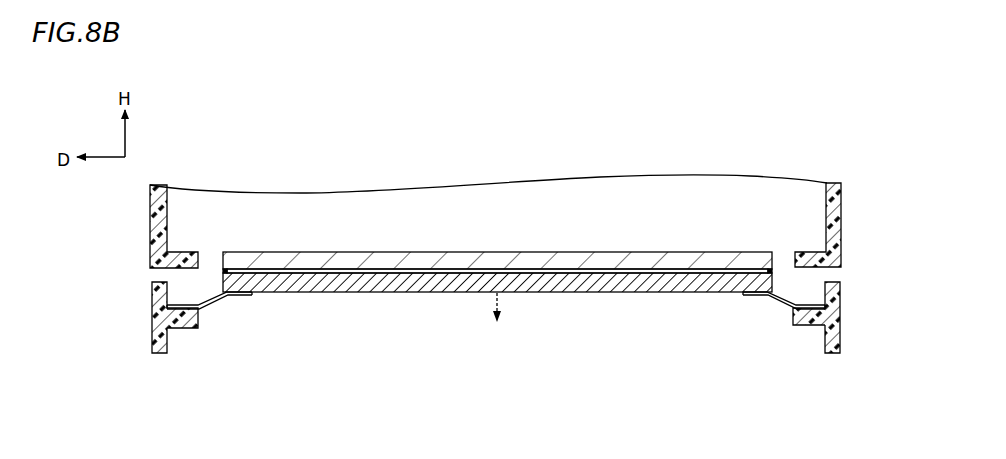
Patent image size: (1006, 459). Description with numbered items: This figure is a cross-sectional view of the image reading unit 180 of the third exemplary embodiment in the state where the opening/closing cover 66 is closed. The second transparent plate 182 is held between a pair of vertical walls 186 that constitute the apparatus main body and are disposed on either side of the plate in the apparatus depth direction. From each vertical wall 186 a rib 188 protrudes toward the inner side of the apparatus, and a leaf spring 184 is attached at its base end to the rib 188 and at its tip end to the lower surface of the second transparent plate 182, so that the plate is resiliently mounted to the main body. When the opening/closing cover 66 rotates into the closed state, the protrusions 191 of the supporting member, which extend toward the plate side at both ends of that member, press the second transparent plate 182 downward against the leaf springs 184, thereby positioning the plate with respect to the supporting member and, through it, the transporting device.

The opening/closing cover 66 is at (846, 191).
The image reading unit 180 is at (888, 191).
The second transparent plate 182 is at (552, 251).
The leaf spring 184 is at (212, 302).
The vertical wall 186 is at (152, 319).
The rib 188 is at (184, 330).
The protrusion 191 is at (222, 281).